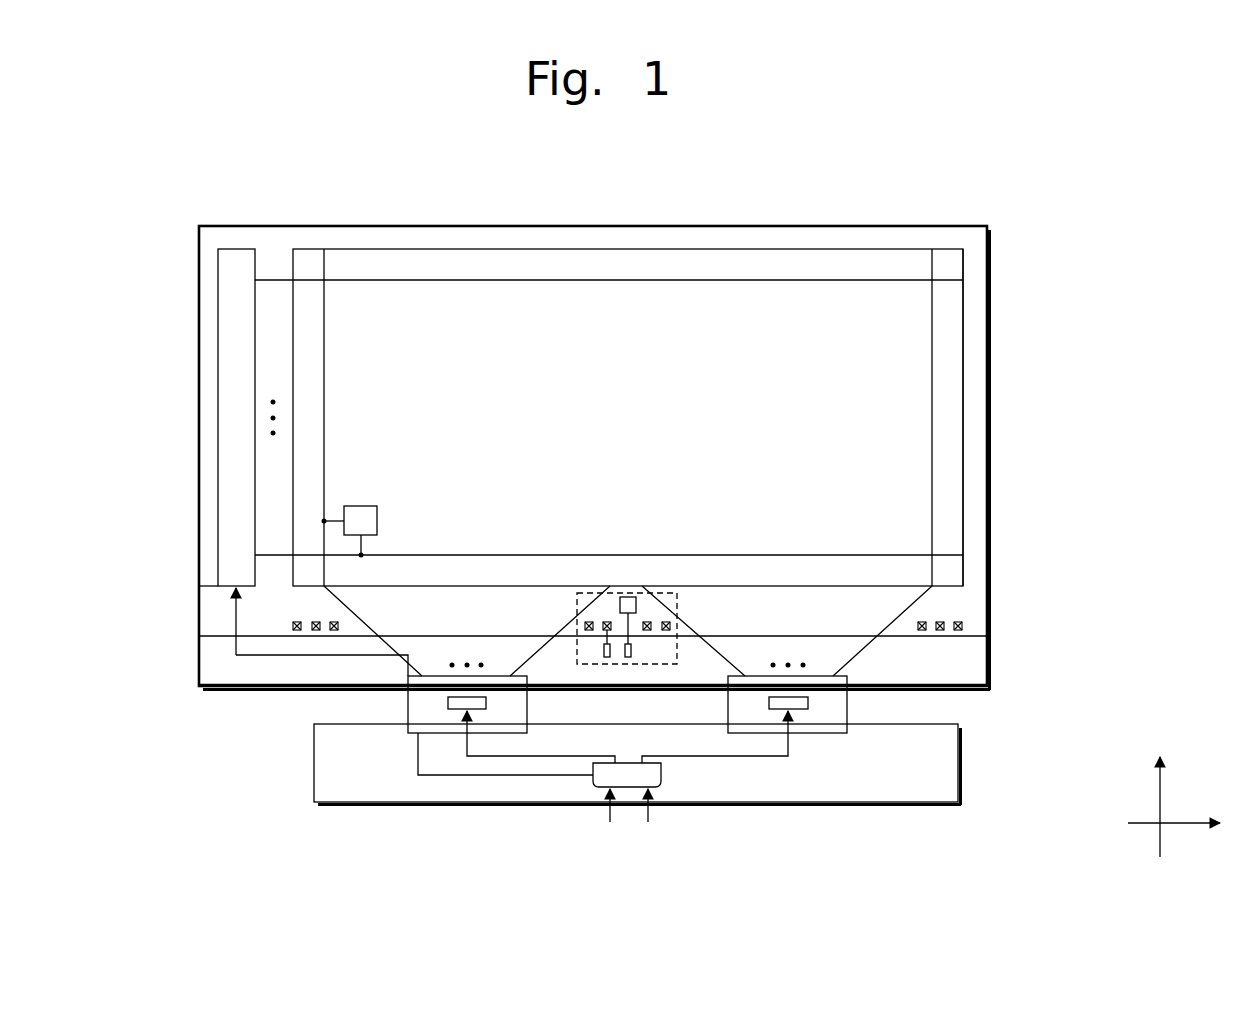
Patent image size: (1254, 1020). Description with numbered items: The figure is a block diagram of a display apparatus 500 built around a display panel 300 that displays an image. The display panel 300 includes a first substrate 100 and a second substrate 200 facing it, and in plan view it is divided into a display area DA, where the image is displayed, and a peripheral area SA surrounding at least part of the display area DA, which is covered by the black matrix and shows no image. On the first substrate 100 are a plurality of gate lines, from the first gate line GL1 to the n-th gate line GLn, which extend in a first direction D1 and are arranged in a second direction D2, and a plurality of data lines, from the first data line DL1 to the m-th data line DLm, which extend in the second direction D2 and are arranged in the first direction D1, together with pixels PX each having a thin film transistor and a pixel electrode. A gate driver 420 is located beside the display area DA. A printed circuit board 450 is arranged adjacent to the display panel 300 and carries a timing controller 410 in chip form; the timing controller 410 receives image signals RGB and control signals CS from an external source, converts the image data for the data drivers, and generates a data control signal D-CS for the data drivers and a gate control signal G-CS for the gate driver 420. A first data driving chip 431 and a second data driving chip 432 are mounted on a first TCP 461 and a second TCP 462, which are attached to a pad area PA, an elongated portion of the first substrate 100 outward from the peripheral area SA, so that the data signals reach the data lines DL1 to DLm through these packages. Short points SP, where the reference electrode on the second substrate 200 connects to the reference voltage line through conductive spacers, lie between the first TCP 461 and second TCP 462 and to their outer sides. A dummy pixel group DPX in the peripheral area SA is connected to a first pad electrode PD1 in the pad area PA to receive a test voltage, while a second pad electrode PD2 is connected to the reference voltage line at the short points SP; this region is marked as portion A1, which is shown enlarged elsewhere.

The display apparatus 500 is at (976, 195).
The gate driver 420 is at (218, 395).
The display area DA is at (913, 328).
The peripheral area SA is at (975, 436).
The first data line DL1 is at (324, 395).
The m-th data line DLm is at (932, 395).
The n-th gate line GLn is at (747, 281).
The first gate line GL1 is at (745, 554).
The pixel PX is at (365, 506).
The second substrate 200 is at (954, 636).
The first substrate 100 is at (978, 668).
The display panel 300 is at (1058, 632).
The pad area PA is at (940, 675).
The portion A1 is at (668, 593).
The short points SP is at (607, 622).
The dummy pixel group DPX is at (626, 597).
The first pad electrode PD1 is at (631, 657).
The second pad electrode PD2 is at (604, 657).
The first TCP 461 is at (408, 707).
The second TCP 462 is at (847, 707).
The first data driving chip 431 is at (455, 709).
The second data driving chip 432 is at (797, 709).
The printed circuit board 450 is at (961, 767).
The timing controller 410 is at (661, 775).
The data control signal D-CS is at (627, 737).
The gate control signal G-CS is at (505, 767).
The control signals CS is at (610, 819).
The image signals RGB is at (648, 819).
The first direction D1 is at (1191, 824).
The second direction D2 is at (1161, 794).